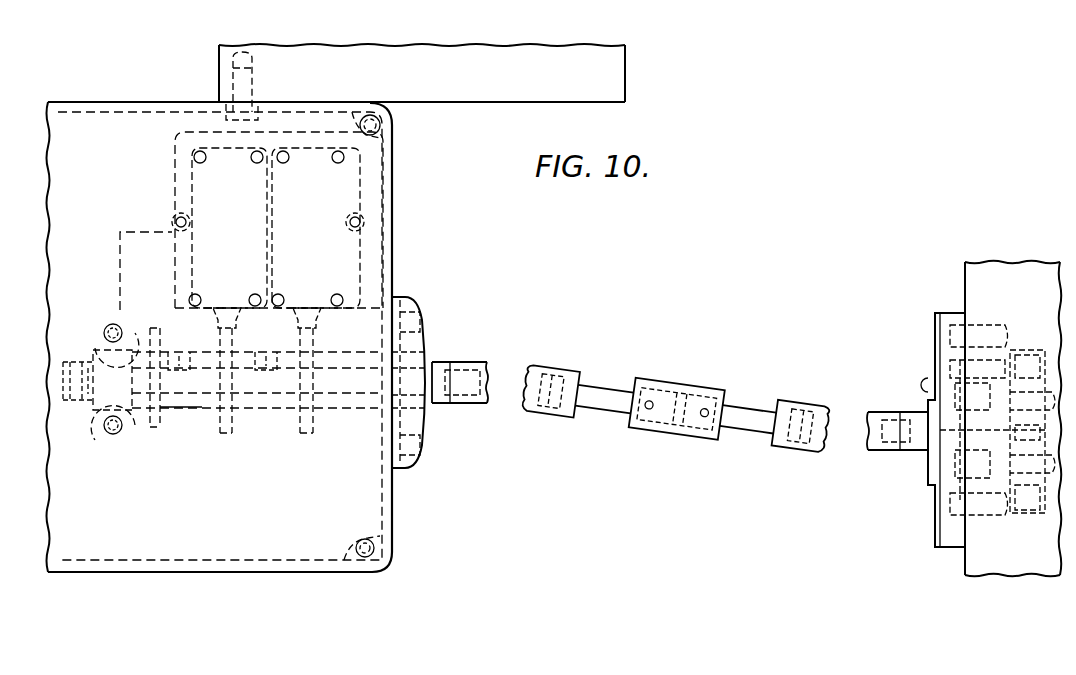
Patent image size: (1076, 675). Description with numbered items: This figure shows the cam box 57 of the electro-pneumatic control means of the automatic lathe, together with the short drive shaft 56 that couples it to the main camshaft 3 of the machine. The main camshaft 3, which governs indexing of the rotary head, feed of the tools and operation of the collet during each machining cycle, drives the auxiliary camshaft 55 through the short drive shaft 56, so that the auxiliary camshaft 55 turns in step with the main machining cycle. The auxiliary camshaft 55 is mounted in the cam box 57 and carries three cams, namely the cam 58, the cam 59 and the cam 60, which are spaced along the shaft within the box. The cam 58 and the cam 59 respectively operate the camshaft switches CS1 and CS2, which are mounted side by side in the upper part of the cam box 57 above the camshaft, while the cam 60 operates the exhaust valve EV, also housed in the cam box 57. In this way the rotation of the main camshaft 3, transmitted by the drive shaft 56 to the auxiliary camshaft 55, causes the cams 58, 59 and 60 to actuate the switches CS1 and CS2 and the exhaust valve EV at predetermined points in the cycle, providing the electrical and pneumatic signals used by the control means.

The main camshaft 3 is at (985, 440).
The auxiliary camshaft 55 is at (201, 412).
The short drive shaft 56 is at (608, 405).
The cam box 57 is at (393, 508).
The cam 58 is at (227, 436).
The cam 59 is at (306, 436).
The cam 60 is at (152, 432).
The camshaft switch CS1 is at (212, 198).
The camshaft switch CS2 is at (330, 195).
The exhaust valve EV is at (133, 277).